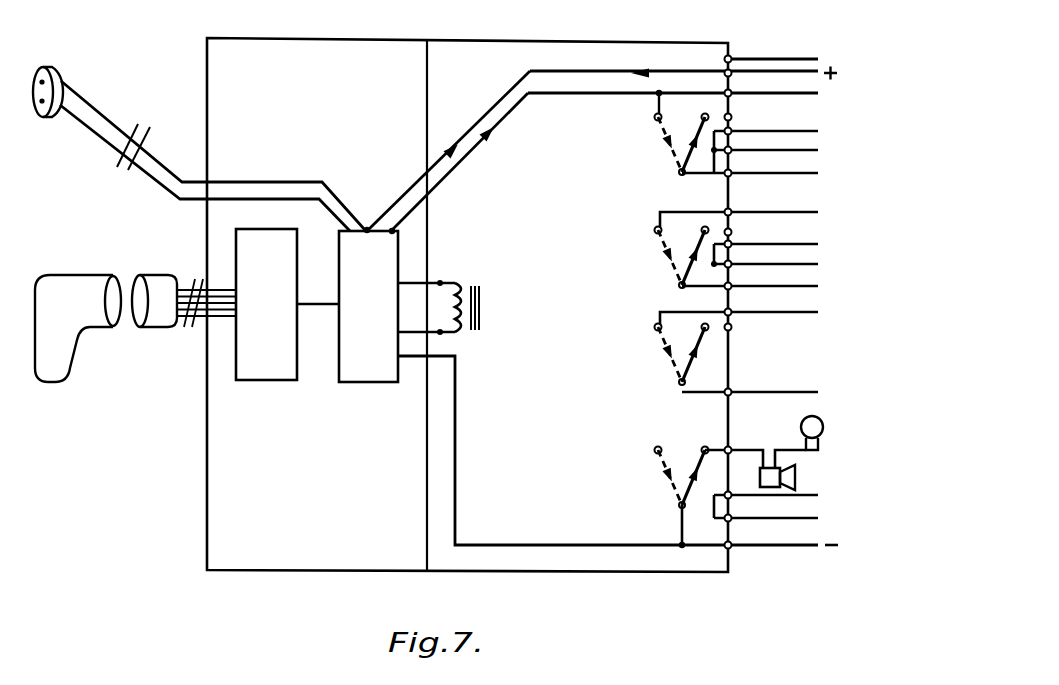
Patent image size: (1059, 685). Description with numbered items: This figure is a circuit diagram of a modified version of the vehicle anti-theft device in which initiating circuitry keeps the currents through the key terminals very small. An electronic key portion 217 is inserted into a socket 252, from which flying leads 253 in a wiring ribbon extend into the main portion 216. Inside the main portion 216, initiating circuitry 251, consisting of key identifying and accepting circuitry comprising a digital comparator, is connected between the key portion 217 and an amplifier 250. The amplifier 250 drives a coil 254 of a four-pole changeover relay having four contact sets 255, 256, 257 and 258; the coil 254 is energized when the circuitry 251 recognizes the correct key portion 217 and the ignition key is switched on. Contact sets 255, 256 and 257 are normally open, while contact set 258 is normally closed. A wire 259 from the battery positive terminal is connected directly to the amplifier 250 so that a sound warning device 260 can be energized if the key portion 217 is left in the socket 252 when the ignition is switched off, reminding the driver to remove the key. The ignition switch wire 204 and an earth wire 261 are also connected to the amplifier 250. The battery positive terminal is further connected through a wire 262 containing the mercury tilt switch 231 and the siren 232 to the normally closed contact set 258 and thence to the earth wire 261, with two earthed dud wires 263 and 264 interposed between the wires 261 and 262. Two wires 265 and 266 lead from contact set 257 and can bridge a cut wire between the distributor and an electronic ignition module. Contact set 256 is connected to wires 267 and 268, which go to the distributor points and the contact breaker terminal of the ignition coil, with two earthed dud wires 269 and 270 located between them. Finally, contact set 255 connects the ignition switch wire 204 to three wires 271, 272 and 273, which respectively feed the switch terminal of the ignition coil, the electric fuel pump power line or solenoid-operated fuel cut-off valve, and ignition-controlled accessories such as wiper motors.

The ignition switch wire 204 is at (571, 92).
The main portion 216 is at (215, 62).
The electronic key portion 217 is at (74, 330).
The mercury tilt switch 231 is at (808, 418).
The siren 232 is at (730, 447).
The amplifier 250 is at (353, 385).
The initiating circuitry 251 is at (257, 385).
The socket 252 is at (160, 322).
The flying leads 253 is at (184, 287).
The coil 254 is at (462, 282).
The contact set 255 is at (680, 143).
The contact set 256 is at (680, 256).
The contact set 257 is at (680, 357).
The contact set 258 is at (680, 489).
The wire 259 is at (413, 192).
The sound warning device 260 is at (57, 74).
The earth wire 261 is at (753, 552).
The wire 262 is at (760, 476).
The earthed dud wire 263 is at (807, 498).
The earthed dud wire 264 is at (773, 521).
The wire 265 is at (771, 315).
The wire 266 is at (754, 388).
The wire 267 is at (746, 211).
The wire 268 is at (783, 289).
The earthed dud wire 269 is at (796, 243).
The earthed dud wire 270 is at (726, 278).
The wire 271 is at (772, 176).
The wire 272 is at (793, 149).
The wire 273 is at (768, 130).